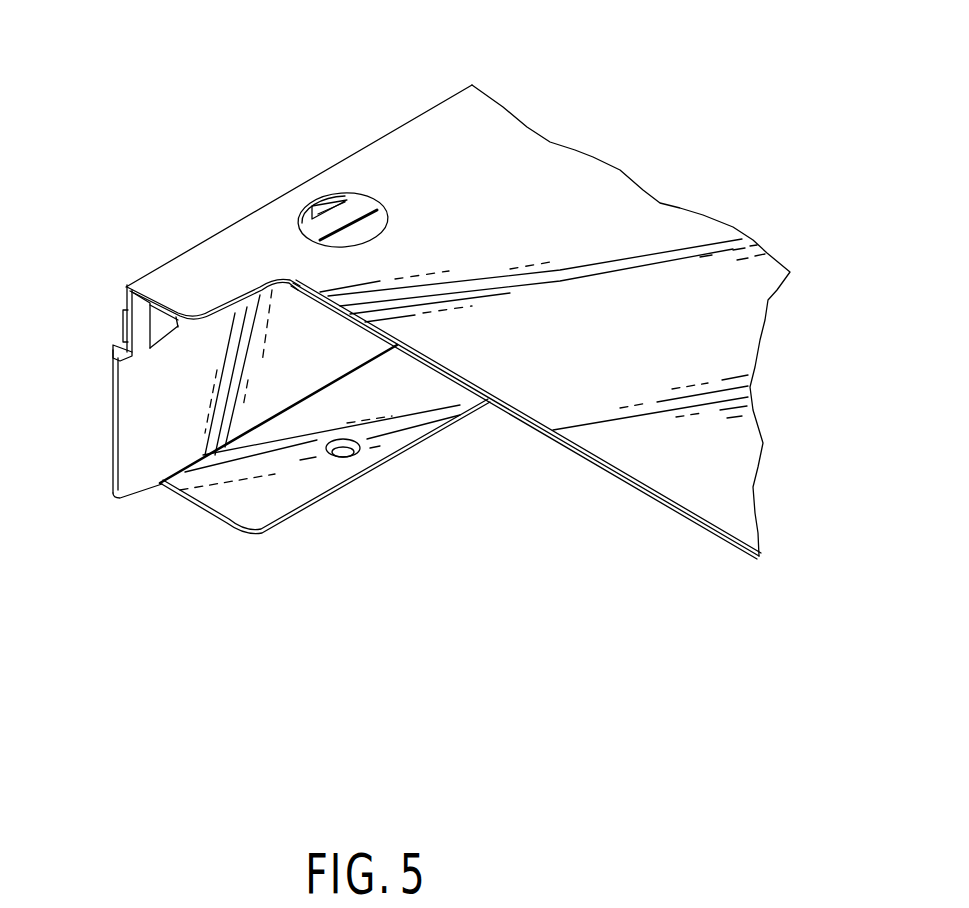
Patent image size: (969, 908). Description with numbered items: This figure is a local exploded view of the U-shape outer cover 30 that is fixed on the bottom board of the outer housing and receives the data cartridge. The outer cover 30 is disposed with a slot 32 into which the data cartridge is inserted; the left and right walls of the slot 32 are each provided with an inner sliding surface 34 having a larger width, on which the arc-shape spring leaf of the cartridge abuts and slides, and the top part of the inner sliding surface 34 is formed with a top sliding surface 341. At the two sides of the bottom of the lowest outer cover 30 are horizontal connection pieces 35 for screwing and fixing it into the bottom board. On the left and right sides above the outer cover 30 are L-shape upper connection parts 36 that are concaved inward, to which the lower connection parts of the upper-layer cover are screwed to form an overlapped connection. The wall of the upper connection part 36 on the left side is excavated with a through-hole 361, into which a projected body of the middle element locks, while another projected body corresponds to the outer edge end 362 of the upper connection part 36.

The U-shape outer cover 30 is at (573, 202).
The slot 32 is at (507, 527).
The inner sliding surface 34 is at (163, 378).
The top sliding surface 341 is at (118, 352).
The horizontal connection piece 35 is at (278, 495).
The upper connection part 36 is at (107, 288).
The through-hole 361 is at (155, 315).
The outer edge end 362 is at (122, 323).